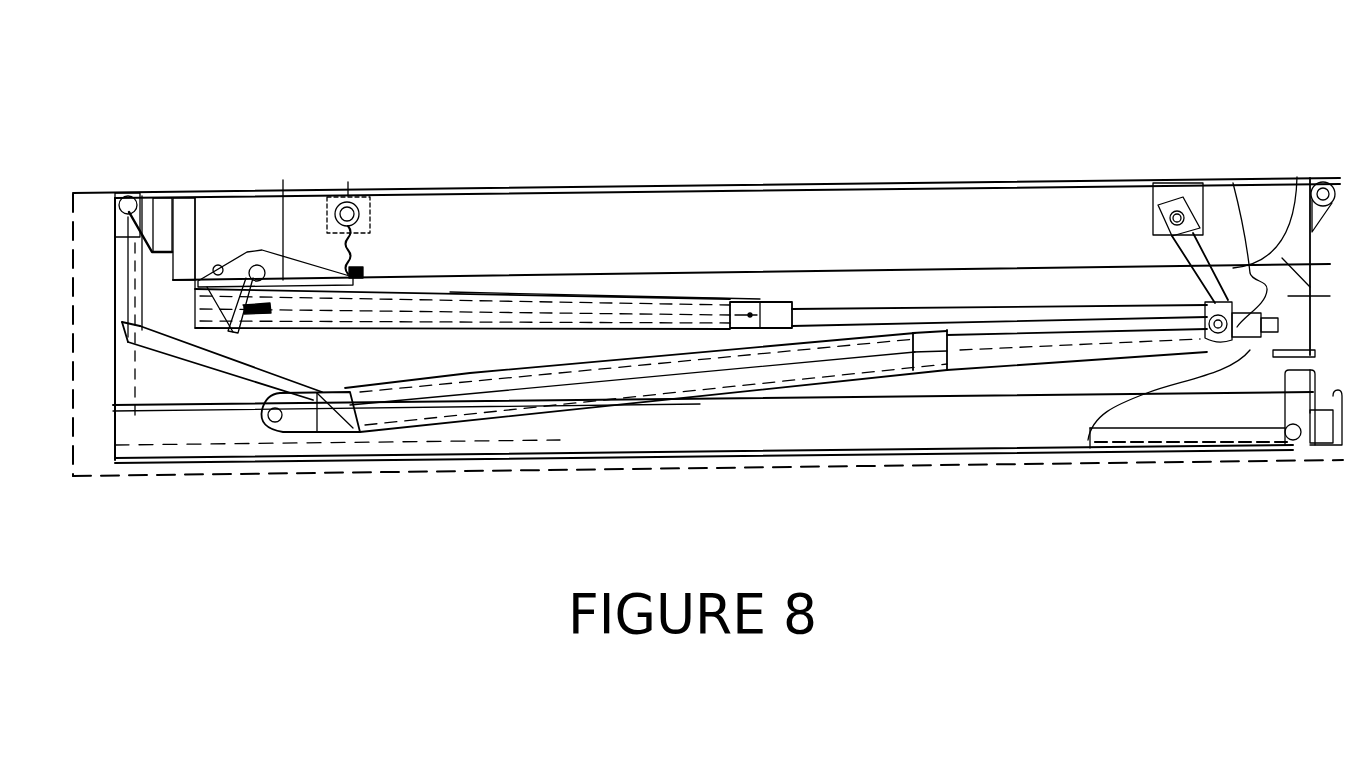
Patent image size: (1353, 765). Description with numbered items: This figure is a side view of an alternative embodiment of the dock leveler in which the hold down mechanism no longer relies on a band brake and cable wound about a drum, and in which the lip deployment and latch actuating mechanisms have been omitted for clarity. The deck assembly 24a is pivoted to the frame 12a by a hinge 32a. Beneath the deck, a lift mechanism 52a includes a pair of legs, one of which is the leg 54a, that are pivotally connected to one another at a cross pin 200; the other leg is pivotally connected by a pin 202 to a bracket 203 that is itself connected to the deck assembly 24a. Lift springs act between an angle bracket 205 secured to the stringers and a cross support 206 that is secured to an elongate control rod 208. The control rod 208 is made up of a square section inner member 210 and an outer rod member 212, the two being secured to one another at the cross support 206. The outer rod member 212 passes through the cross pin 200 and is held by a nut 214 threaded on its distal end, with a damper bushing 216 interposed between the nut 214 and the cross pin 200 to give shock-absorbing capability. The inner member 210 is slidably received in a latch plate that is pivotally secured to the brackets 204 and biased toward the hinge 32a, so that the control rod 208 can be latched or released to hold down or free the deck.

The frame 12a is at (848, 425).
The deck assembly 24a is at (855, 187).
The hinge 32a is at (113, 187).
The lift mechanism 52a is at (458, 427).
The leg 54a is at (607, 392).
The cross pin 200 is at (1237, 187).
The pin 202 is at (1180, 190).
The bracket 203 is at (1145, 183).
The brackets 204 is at (243, 231).
The angle bracket 205 is at (213, 279).
The cross support 206 is at (760, 300).
The control rod 208 is at (584, 296).
The inner member 210 is at (432, 296).
The outer rod member 212 is at (880, 317).
The nut 214 is at (1293, 180).
The damper bushing 216 is at (1088, 440).